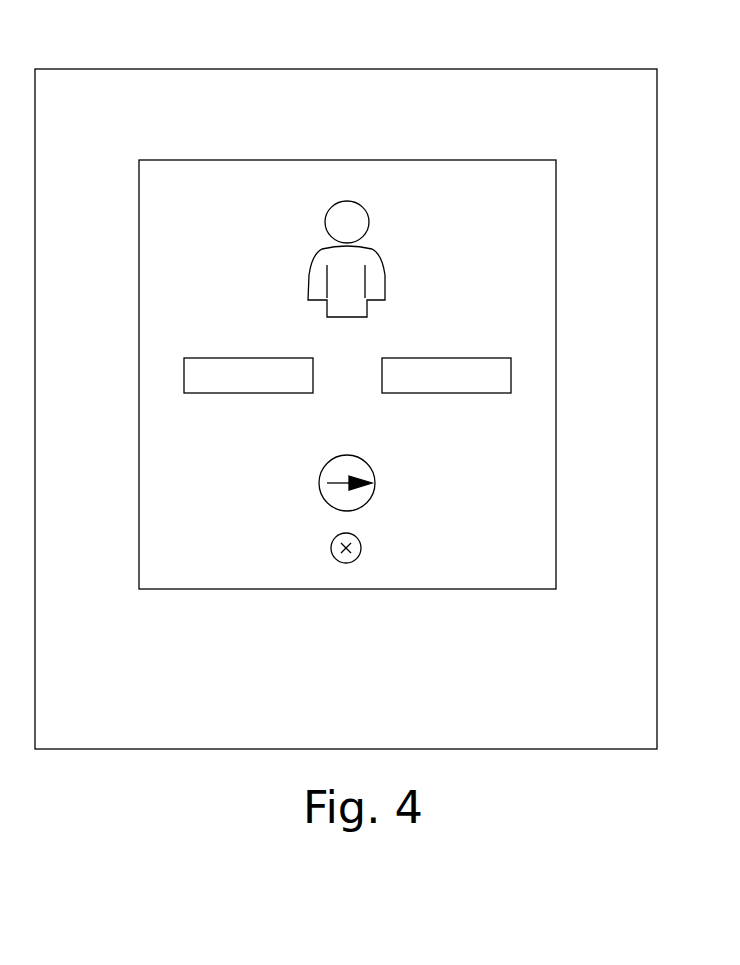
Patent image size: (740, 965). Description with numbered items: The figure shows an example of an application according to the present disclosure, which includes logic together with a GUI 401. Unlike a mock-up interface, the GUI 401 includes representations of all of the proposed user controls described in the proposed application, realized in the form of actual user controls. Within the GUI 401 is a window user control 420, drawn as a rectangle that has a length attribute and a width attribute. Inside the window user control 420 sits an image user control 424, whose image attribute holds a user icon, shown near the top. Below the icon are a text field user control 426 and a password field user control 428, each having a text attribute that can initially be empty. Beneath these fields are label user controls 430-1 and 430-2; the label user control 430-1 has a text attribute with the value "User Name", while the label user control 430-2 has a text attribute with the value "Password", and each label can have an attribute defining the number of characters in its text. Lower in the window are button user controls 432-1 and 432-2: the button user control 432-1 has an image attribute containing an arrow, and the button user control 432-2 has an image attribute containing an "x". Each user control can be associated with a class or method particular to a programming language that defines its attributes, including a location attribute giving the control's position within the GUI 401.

The GUI 401 is at (560, 69).
The window user control 420 is at (519, 160).
The image user control 424 is at (377, 249).
The text field user control 426 is at (203, 357).
The password field user control 428 is at (474, 357).
The label user control 430-1 is at (218, 428).
The label user control 430-2 is at (487, 428).
The button user control 432-1 is at (375, 483).
The button user control 432-2 is at (361, 548).